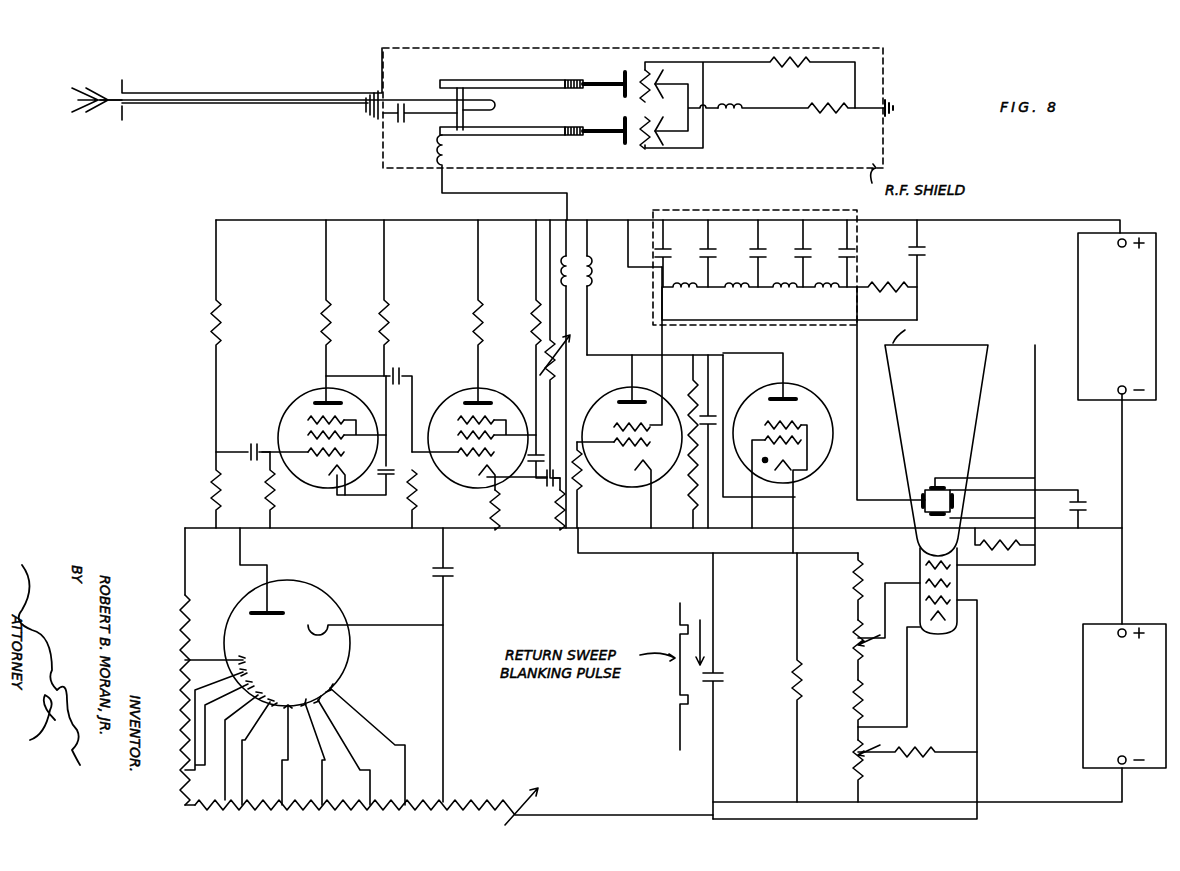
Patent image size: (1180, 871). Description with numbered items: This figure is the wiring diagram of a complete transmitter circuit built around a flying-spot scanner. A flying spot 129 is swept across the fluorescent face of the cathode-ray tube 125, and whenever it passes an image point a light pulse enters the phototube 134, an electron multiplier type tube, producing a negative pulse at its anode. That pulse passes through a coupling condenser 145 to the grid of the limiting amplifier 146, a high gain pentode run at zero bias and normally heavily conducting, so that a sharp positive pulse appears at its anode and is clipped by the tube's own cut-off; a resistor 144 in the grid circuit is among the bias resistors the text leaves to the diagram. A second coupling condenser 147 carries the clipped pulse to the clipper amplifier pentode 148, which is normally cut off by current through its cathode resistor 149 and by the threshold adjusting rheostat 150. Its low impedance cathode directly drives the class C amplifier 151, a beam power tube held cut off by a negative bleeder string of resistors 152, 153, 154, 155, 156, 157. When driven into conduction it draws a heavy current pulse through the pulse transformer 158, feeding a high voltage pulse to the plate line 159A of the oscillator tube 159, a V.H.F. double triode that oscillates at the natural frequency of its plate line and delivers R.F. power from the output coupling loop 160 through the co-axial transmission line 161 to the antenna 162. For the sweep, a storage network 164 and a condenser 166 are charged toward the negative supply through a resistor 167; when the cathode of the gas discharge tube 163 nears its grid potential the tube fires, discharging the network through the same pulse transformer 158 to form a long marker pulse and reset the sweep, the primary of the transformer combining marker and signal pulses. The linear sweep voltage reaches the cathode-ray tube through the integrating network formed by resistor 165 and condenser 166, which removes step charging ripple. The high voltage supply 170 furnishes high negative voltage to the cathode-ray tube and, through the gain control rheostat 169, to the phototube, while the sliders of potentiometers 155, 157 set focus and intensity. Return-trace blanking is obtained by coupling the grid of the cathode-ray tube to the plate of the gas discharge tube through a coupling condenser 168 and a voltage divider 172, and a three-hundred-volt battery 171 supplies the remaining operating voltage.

The antenna 162 is at (92, 134).
The co-axial transmission line 161 is at (255, 132).
The output coupling loop 160 is at (435, 91).
The plate line 159A is at (477, 147).
The high frequency oscillator tube 159 is at (722, 150).
The threshold adjusting rheostat 150 is at (545, 365).
The limiting amplifier 146 is at (304, 387).
The coupling condenser 147 is at (392, 374).
The clipper amplifier pentode 148 is at (461, 388).
The coupling condenser 145 is at (248, 450).
The grid resistor 144 is at (250, 510).
The cathode resistor 149 is at (492, 515).
The bleeder resistor 152 is at (556, 508).
The bleeder resistor 153 is at (583, 485).
The pulse transformer 158 is at (596, 268).
The storage network 164 is at (785, 267).
The filter resistor 165 is at (900, 280).
The condenser 166 is at (922, 258).
The gas discharge tube 163 is at (843, 389).
The voltage divider 172 is at (694, 400).
The flying spot 129 is at (910, 340).
The cathode-ray tube 125 is at (972, 551).
The 300 volt battery 171 is at (1117, 428).
The phototube 134 is at (340, 587).
The class C amplifier 151 is at (673, 485).
The bleeder resistor 154 is at (853, 578).
The potentiometer 155 is at (854, 648).
The bleeder resistor 156 is at (854, 688).
The potentiometer 157 is at (854, 754).
The charging resistor 167 is at (792, 680).
The coupling condenser 168 is at (720, 690).
The gain control rheostat 169 is at (532, 808).
The high voltage supply 170 is at (1124, 696).